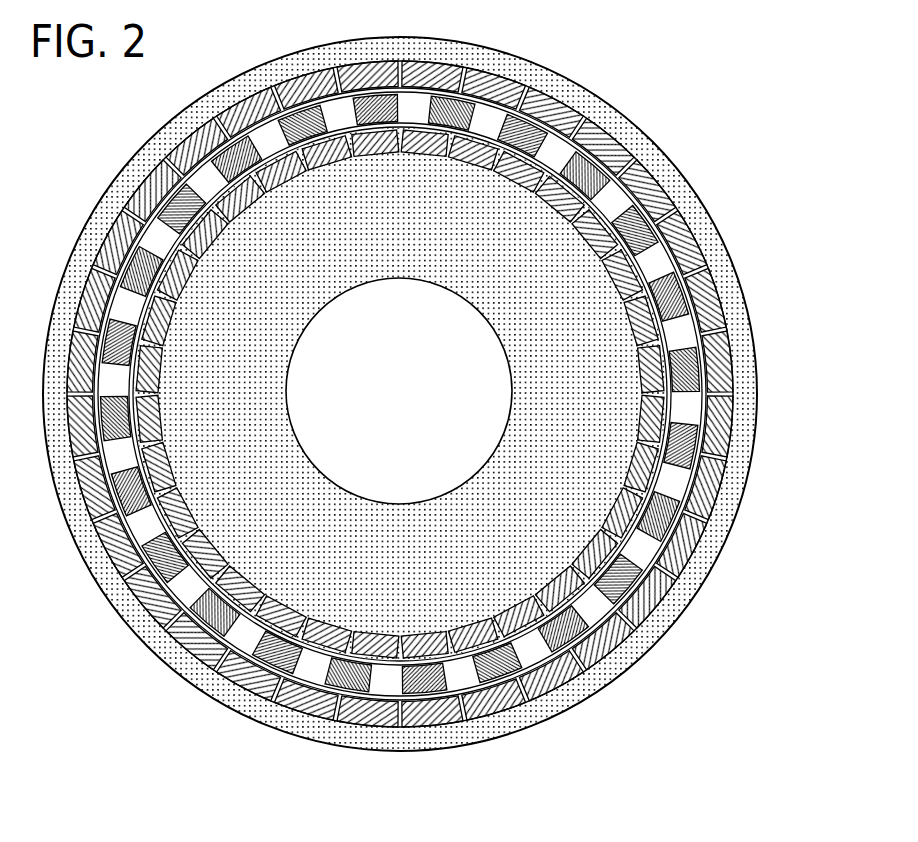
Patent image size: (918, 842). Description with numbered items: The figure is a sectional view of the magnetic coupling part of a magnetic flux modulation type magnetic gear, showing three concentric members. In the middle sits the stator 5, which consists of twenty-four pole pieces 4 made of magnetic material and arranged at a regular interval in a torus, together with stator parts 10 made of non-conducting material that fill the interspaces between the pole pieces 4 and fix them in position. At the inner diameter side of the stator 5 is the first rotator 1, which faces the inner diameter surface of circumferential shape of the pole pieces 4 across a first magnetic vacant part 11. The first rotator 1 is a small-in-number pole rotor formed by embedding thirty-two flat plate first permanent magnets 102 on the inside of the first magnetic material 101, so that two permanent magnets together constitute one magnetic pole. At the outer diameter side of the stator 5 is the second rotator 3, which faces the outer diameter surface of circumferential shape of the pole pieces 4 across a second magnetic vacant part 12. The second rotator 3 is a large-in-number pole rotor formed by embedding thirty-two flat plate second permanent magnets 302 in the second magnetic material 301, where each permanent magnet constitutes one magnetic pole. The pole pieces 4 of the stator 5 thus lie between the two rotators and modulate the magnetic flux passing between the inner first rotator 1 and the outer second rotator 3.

The first rotator 1 is at (493, 394).
The first magnetic material 101 is at (610, 462).
The first permanent magnets 102 is at (673, 517).
The second rotator 3 is at (455, 399).
The second magnetic material 301 is at (640, 652).
The second permanent magnets 302 is at (657, 608).
The pole pieces 4 is at (643, 133).
The stator 5 is at (401, 390).
The stator parts 10 is at (401, 394).
The first magnetic vacant part 11 is at (663, 180).
The second magnetic vacant part 12 is at (693, 238).